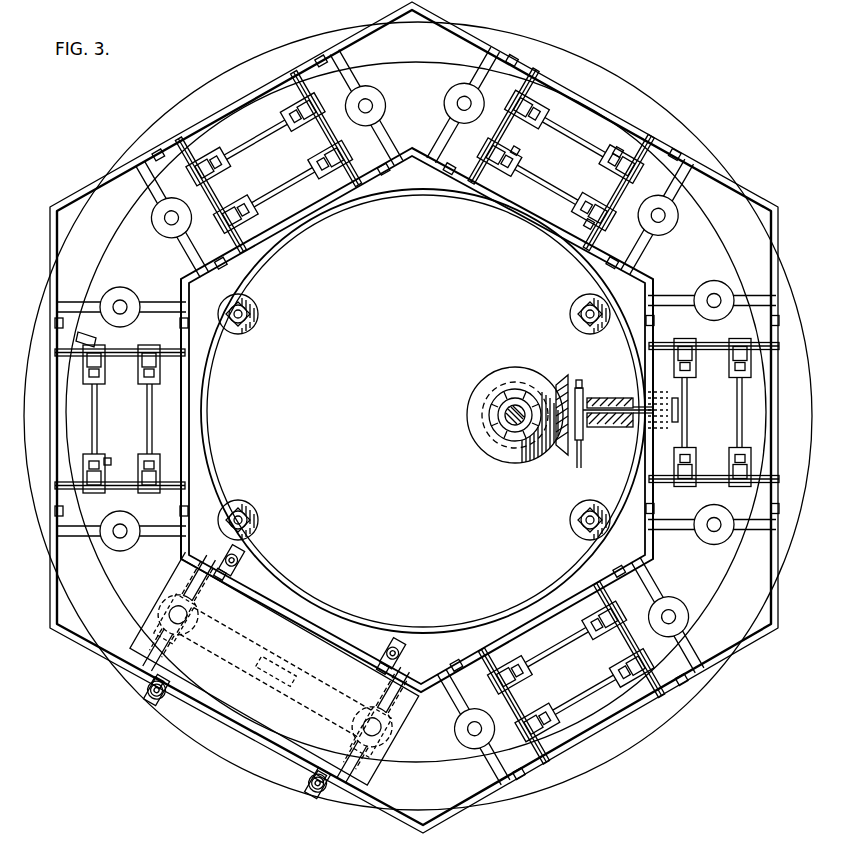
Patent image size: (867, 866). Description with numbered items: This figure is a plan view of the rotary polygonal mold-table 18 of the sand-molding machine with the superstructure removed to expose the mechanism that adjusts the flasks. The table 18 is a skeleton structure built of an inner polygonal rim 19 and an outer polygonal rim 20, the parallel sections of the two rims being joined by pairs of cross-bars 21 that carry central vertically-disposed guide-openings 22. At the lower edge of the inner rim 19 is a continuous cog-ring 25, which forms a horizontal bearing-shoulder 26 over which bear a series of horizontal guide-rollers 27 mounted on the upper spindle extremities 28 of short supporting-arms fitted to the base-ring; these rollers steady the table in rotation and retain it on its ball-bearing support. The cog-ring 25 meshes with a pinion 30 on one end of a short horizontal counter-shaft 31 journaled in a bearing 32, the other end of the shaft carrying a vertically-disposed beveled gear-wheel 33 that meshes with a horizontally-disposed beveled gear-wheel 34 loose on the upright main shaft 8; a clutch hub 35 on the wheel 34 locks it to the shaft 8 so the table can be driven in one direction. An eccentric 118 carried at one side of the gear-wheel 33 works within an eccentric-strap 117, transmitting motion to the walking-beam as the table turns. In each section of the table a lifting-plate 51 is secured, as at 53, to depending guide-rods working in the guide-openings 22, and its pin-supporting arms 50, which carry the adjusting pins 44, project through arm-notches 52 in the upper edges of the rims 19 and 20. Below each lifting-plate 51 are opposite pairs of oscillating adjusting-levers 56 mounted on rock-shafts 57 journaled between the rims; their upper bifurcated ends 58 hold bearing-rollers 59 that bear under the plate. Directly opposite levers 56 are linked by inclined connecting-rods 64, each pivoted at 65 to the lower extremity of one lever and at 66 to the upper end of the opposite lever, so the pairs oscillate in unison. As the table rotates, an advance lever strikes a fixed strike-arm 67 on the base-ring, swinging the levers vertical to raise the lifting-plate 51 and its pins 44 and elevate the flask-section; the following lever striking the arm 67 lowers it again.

The upright main shaft 8 is at (506, 417).
The rotary polygonal mold-table 18 is at (772, 600).
The inner polygonal rim 19 is at (300, 222).
The outer polygonal rim 20 is at (470, 40).
The cross-bars 21 is at (478, 82).
The guide-openings 22 is at (460, 108).
The cog-ring 25 is at (197, 338).
The bearing-shoulder 26 is at (433, 196).
The horizontal guide-rollers 27 is at (258, 316).
The upper spindle extremities 28 is at (248, 326).
The pinion 30 is at (685, 408).
The short horizontal counter-shaft 31 is at (615, 396).
The bearing 32 is at (605, 428).
The vertically-disposed beveled gear-wheel 33 is at (560, 384).
The horizontally-disposed beveled gear-wheel 34 is at (512, 362).
The clutch hub 35 is at (490, 410).
The pins 44 is at (243, 565).
The pin-supporting arms 50 is at (158, 707).
The lifting-plate 51 is at (276, 668).
The arm-notches 52 is at (670, 152).
The connection of guide-rods to lifting-plate 53 is at (172, 618).
The oscillating adjusting-levers 56 is at (510, 98).
The rock-shafts 57 is at (197, 717).
The upper bifurcated ends 58 is at (532, 133).
The bearing-rollers 59 is at (226, 660).
The inclined connecting-rods 64 is at (275, 187).
The pivotal connection 65 is at (616, 153).
The pivotal connection 66 is at (515, 151).
The fixed strike-arm 67 is at (97, 341).
The eccentric-strap 117 is at (583, 395).
The eccentric 118 is at (582, 460).